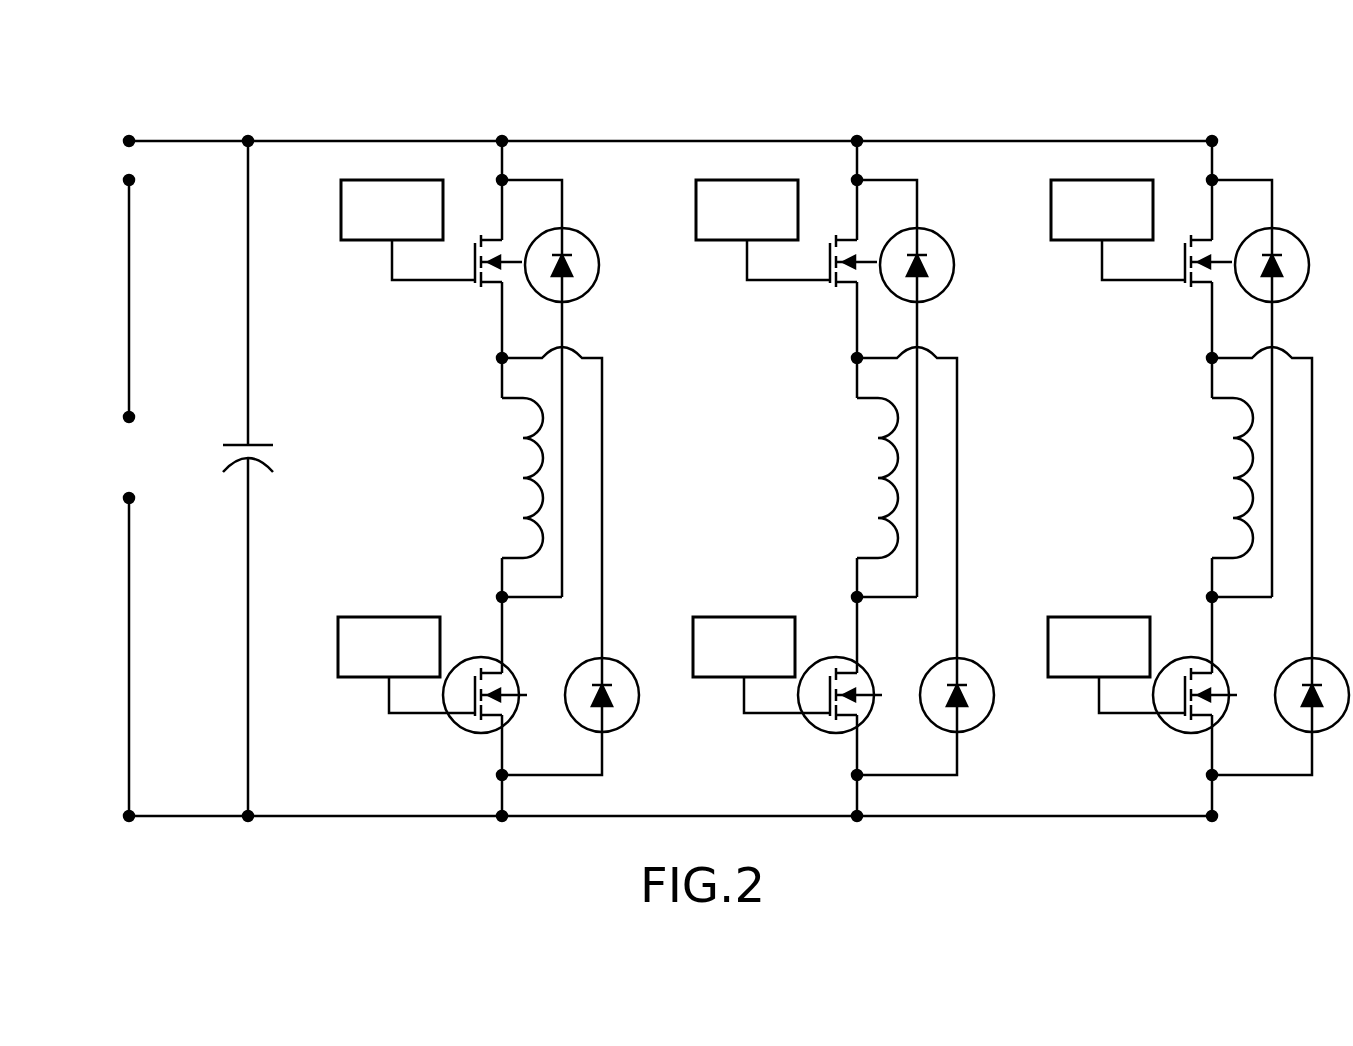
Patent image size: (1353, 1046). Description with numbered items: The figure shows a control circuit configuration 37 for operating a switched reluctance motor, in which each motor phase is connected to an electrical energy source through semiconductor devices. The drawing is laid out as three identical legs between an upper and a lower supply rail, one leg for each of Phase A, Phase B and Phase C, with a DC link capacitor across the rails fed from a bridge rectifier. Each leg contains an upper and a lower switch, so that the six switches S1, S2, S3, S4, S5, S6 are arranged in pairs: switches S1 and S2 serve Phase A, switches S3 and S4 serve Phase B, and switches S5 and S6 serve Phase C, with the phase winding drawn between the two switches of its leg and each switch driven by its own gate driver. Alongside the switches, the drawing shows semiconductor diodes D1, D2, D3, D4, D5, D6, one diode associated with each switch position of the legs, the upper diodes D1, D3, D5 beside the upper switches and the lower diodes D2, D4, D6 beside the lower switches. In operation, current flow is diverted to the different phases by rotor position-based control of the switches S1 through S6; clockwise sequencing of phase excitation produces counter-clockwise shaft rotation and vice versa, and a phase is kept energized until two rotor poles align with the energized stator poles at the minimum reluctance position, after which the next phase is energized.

The circuit configuration 37 is at (712, 418).
The switch S1 is at (492, 245).
The switch S2 is at (485, 677).
The switch S3 is at (847, 245).
The switch S4 is at (840, 677).
The switch S5 is at (1202, 245).
The switch S6 is at (1195, 677).
The diode D1 is at (566, 252).
The diode D2 is at (601, 680).
The diode D3 is at (921, 252).
The diode D4 is at (956, 680).
The diode D5 is at (1276, 252).
The diode D6 is at (1311, 680).